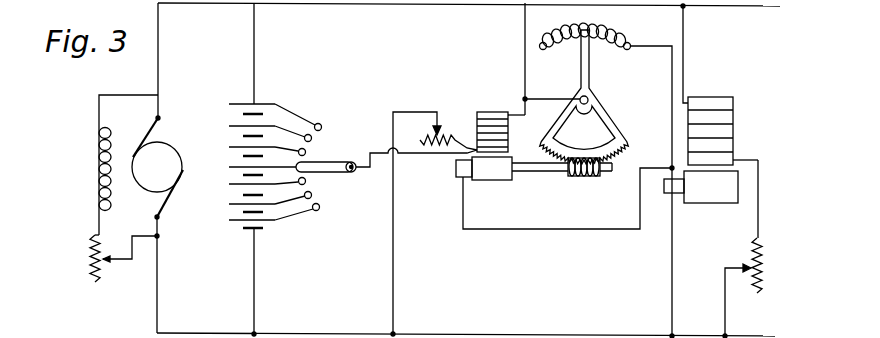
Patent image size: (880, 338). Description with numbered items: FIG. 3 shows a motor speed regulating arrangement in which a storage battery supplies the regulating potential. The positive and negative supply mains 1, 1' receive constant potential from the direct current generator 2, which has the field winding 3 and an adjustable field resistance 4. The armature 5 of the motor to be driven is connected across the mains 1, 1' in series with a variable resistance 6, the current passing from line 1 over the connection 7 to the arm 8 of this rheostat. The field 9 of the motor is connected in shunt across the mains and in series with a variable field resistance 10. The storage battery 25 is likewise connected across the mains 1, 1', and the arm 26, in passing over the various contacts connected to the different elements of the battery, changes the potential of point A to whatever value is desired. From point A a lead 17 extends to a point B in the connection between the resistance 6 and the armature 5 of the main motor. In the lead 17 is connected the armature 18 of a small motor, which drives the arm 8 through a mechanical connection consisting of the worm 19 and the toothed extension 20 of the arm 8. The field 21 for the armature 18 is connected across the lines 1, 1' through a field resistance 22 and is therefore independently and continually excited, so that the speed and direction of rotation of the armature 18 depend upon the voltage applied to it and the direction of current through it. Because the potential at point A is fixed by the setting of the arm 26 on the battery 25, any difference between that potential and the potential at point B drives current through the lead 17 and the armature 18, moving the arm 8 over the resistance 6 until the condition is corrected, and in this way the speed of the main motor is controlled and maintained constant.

The positive supply main 1 is at (469, 21).
The negative supply main 1' is at (466, 324).
The direct current generator 2 is at (157, 168).
The field winding 3 is at (94, 172).
The adjustable field resistance 4 is at (82, 258).
The armature 5 is at (701, 187).
The variable resistance 6 is at (607, 174).
The connection 7 is at (543, 59).
The arm 8 is at (590, 68).
The field 9 is at (714, 99).
The variable field resistance 10 is at (754, 249).
The lead 17 is at (428, 157).
The armature of small motor 18 is at (484, 168).
The worm 19 is at (586, 178).
The toothed extension 20 is at (587, 158).
The field 21 is at (508, 134).
The field resistance 22 is at (434, 222).
The storage battery 25 is at (262, 169).
The arm 26 is at (326, 150).
The point A is at (412, 171).
The point B is at (670, 167).